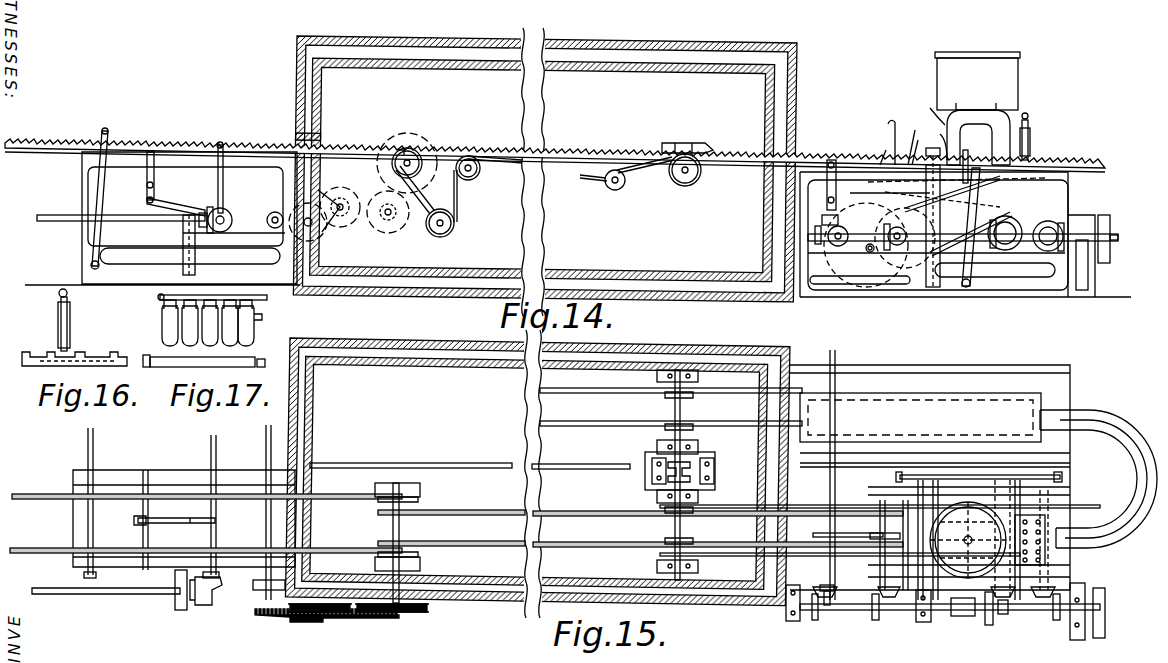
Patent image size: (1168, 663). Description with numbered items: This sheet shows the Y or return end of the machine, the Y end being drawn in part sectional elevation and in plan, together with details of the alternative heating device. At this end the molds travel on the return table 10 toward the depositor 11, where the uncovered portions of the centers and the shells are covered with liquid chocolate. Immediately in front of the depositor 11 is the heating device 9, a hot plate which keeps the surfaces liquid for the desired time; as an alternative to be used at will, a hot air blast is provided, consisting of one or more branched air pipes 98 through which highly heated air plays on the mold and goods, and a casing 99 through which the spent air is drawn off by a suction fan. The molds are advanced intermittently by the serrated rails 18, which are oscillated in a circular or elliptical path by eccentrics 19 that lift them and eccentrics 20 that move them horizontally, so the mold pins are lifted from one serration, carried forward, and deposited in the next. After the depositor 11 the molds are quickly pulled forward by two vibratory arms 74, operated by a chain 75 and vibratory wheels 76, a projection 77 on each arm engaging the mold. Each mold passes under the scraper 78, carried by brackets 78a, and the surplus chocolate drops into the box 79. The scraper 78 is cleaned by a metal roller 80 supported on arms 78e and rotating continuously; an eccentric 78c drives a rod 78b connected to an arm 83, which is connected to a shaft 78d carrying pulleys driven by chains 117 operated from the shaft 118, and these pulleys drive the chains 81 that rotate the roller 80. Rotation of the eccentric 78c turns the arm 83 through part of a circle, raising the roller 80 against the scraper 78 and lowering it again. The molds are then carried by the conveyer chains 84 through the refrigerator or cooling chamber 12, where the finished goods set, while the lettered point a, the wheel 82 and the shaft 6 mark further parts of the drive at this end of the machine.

In FIG. 15, the drive shaft 6 is at (666, 475).
In FIG. 15, the heating device 9 is at (920, 417).
In FIG. 15, the return table 10 is at (1105, 430).
In FIG. 14, the depositor 11 is at (977, 81).
In FIG. 15, the depositor 11 is at (969, 540).
In FIG. 14, the cooling chamber 12 is at (542, 169).
In FIG. 15, the cooling chamber 12 is at (535, 472).
In FIG. 14, the rails 18 is at (812, 157).
In FIG. 14, the eccentrics 19 is at (230, 215).
In FIG. 14, the eccentrics 20 is at (214, 211).
In FIG. 15, the eccentrics 20 is at (878, 548).
In FIG. 14, the vibratory arms 74 is at (911, 143).
In FIG. 14, the chain 75 is at (883, 148).
In FIG. 14, the vibratory wheels 76 is at (920, 280).
In FIG. 14, the projection 77 is at (934, 139).
In FIG. 14, the scraper 78 is at (915, 135).
In FIG. 15, the scraper 78 is at (918, 500).
In FIG. 15, the brackets 78a is at (918, 592).
In FIG. 14, the rod 78b is at (980, 240).
In FIG. 15, the rod 78b is at (948, 548).
In FIG. 14, the eccentric 78c is at (942, 204).
In FIG. 15, the eccentric 78c is at (866, 538).
In FIG. 15, the shaft 78d is at (990, 542).
In FIG. 14, the arms 78e is at (967, 282).
In FIG. 14, the box 79 is at (885, 136).
In FIG. 14, the metal roller 80 is at (922, 212).
In FIG. 14, the chains 81 is at (968, 165).
In FIG. 14, the gear wheel 82 is at (892, 266).
In FIG. 14, the arm 83 is at (984, 213).
In FIG. 14, the conveyer chains 84 is at (601, 158).
In FIG. 15, the conveyer chains 84 is at (512, 510).
In FIG. 14, the branched air pipes 98 is at (1028, 122).
In FIG. 16, the branched air pipes 98 is at (163, 297).
In FIG. 17, the branched air pipes 98 is at (163, 298).
In FIG. 15, the branched air pipes 98 is at (1045, 556).
In FIG. 14, the casing 99 is at (1030, 146).
In FIG. 16, the casing 99 is at (163, 333).
In FIG. 17, the casing 99 is at (163, 333).
In FIG. 14, the chains 117 is at (1040, 202).
In FIG. 14, the shaft 118 is at (1092, 250).
In FIG. 15, the shaft 118 is at (1100, 528).
In FIG. 14, the bracket a is at (933, 108).
In FIG. 15, the return end Y is at (1099, 486).